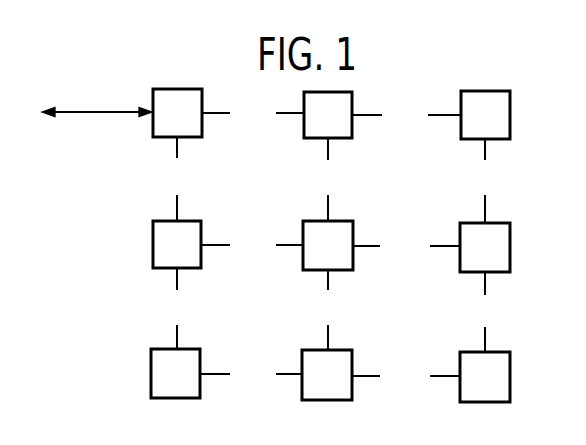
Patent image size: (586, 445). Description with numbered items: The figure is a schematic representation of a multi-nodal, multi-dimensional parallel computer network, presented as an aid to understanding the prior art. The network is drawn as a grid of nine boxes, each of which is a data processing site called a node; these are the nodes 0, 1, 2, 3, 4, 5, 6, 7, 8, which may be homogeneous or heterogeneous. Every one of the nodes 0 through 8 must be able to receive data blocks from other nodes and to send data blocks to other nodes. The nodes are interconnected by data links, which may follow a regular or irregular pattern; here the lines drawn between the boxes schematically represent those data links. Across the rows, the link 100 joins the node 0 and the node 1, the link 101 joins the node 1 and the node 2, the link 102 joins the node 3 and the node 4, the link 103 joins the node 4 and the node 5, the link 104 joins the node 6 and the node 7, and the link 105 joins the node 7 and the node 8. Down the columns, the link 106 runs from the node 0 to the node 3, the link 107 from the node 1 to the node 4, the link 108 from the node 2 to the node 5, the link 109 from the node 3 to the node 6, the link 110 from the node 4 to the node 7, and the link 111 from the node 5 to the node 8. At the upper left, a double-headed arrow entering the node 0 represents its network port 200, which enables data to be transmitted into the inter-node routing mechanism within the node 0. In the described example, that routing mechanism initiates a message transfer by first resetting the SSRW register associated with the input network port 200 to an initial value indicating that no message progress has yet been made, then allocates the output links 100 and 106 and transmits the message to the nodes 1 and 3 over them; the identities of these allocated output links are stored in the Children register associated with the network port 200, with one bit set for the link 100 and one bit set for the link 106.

The node 0 is at (177, 113).
The node 1 is at (328, 115).
The node 2 is at (485, 115).
The node 3 is at (177, 244).
The node 4 is at (328, 245).
The node 5 is at (485, 247).
The node 6 is at (175, 373).
The node 7 is at (327, 375).
The node 8 is at (485, 377).
The data link 100 is at (253, 115).
The data link 101 is at (406, 116).
The data link 102 is at (252, 246).
The data link 103 is at (406, 247).
The data link 104 is at (251, 376).
The data link 105 is at (406, 377).
The data link 106 is at (178, 179).
The data link 107 is at (327, 179).
The data link 108 is at (487, 181).
The data link 109 is at (177, 308).
The data link 110 is at (323, 310).
The data link 111 is at (483, 312).
The network port 200 is at (80, 114).